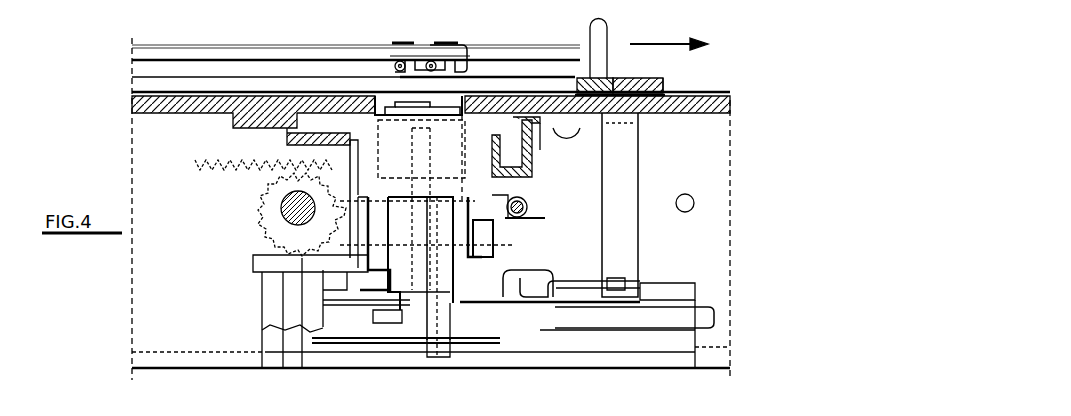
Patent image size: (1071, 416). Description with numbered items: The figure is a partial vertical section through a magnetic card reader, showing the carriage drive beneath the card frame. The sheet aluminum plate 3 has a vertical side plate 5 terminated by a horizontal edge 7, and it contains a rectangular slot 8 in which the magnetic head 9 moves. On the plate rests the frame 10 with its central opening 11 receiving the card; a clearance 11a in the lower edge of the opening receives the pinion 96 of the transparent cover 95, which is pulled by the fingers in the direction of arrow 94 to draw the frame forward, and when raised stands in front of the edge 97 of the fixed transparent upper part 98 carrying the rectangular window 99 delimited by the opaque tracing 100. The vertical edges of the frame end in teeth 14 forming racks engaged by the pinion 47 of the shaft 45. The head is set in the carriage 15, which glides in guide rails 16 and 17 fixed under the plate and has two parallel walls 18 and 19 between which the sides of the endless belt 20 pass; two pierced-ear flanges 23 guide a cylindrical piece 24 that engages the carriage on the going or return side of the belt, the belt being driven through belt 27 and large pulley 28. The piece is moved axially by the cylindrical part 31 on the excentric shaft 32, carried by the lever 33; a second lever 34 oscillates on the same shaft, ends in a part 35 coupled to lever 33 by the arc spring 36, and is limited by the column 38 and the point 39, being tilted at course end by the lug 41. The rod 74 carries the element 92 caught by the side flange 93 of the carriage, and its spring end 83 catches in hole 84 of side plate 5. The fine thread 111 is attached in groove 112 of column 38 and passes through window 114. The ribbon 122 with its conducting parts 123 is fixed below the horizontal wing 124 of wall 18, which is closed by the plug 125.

The plate 3 is at (714, 105).
The side plate 5 is at (705, 158).
The horizontal edge 7 is at (585, 355).
The rectangular slot 8 is at (378, 103).
The magnetic head 9 is at (410, 107).
The frame 10 is at (664, 84).
The central opening 11 is at (578, 82).
The clearance 11a is at (622, 88).
The teeth 14 is at (205, 168).
The carriage 15 is at (477, 135).
The guide rail 16 is at (290, 140).
The guide rail 17 is at (533, 151).
The wall 18 is at (352, 245).
The wall 19 is at (486, 245).
The endless belt 20 is at (367, 218).
The flanges 23 is at (377, 268).
The cylindrical piece 24 is at (359, 213).
The belt 27 is at (655, 315).
The large pulley 28 is at (343, 343).
The cylindrical part 31 is at (407, 205).
The excentric shaft 32 is at (432, 180).
The lever 33 is at (487, 285).
The second lever 34 is at (516, 315).
The end part 35 is at (600, 283).
The arc spring 36 is at (566, 268).
The column 38 is at (445, 328).
The point 39 is at (385, 323).
The lug 41 is at (620, 178).
The shaft 45 is at (282, 205).
The pinion 47 is at (262, 217).
The rod 74 is at (528, 205).
The perpendicular end 83 is at (692, 208).
The hole 84 is at (692, 199).
The element 92 is at (527, 200).
The side flange 93 is at (530, 218).
The arrow 94 is at (669, 34).
The transparent cover 95 is at (523, 88).
The pinion 96 is at (605, 42).
The edge 97 is at (462, 56).
The fixed transparent upper part 98 is at (268, 52).
The rectangular window 99 is at (418, 42).
The opaque tracing 100 is at (400, 43).
The thread 111 is at (403, 345).
The groove 112 is at (446, 358).
The window 114 is at (287, 350).
The ribbon 122 is at (292, 288).
The conducting parts 123 is at (310, 298).
The horizontal wing 124 is at (270, 268).
The plug 125 is at (352, 192).